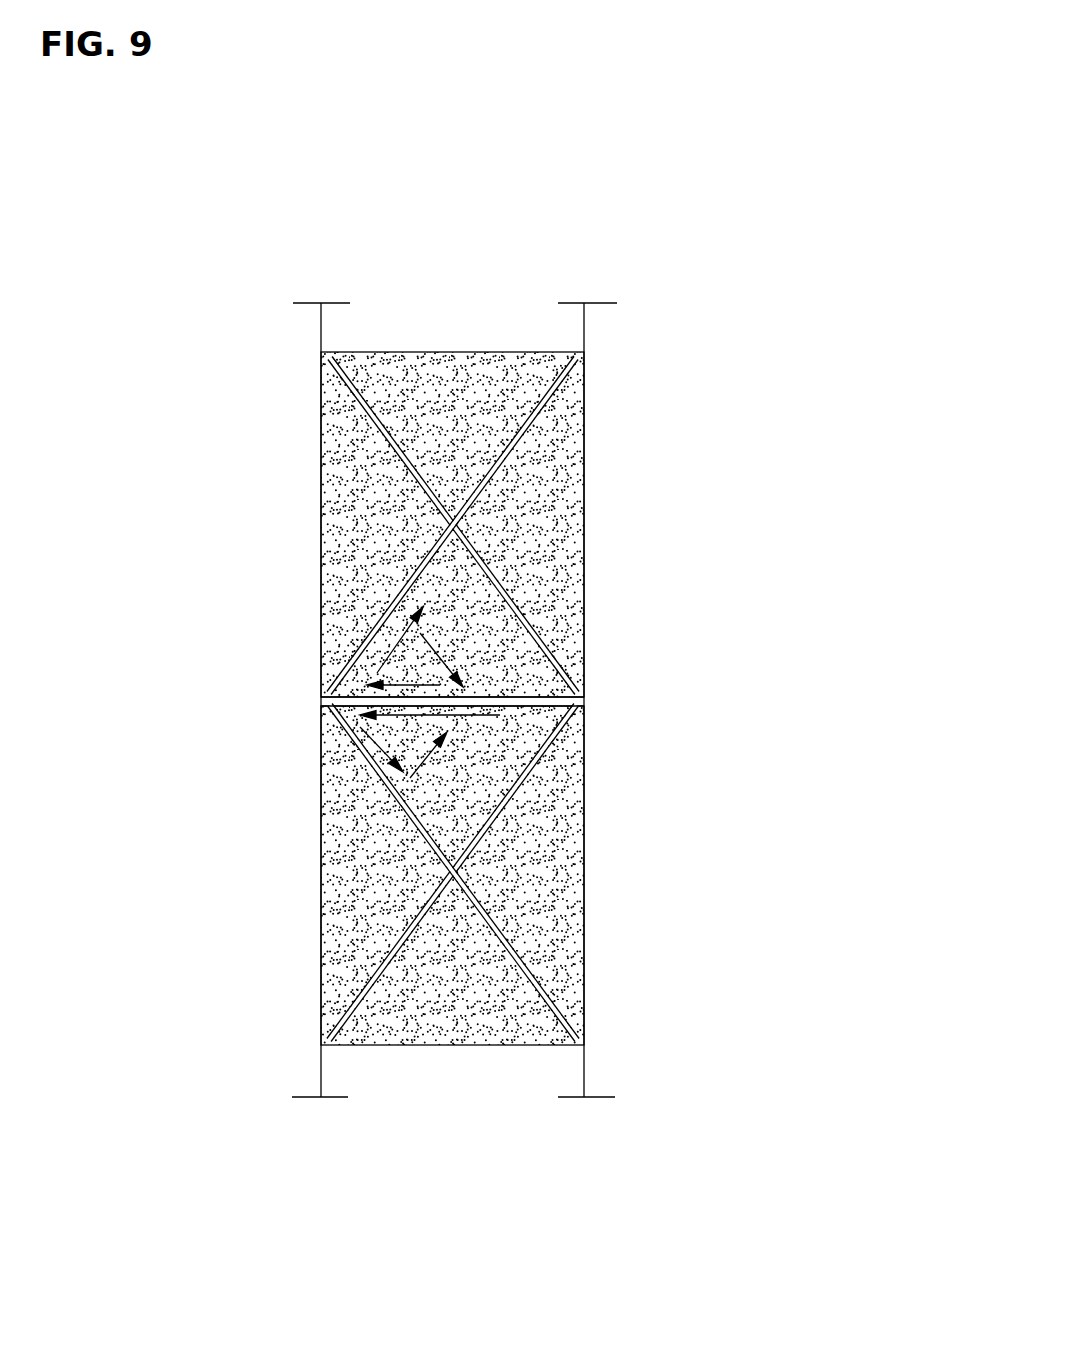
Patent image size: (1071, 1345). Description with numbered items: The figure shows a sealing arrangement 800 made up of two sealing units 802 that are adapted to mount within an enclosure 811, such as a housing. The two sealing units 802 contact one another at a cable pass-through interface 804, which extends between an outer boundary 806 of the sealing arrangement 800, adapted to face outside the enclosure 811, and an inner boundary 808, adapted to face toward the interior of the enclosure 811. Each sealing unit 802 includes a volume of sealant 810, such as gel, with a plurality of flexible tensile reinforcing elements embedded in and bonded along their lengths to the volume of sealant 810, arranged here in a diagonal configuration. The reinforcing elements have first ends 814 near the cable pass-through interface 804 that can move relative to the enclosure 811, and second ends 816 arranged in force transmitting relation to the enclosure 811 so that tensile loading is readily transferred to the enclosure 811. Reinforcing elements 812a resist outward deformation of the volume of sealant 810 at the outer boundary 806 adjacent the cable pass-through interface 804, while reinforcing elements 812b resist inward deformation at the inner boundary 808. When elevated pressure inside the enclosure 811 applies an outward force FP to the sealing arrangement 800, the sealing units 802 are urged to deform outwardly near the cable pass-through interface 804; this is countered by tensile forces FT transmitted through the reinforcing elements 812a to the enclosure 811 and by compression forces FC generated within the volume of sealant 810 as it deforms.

The sealing arrangement 800 is at (452, 635).
The sealing unit 802 is at (603, 436).
The cable pass-through interface 804 is at (553, 667).
The outer boundary 806 is at (302, 539).
The inner boundary 808 is at (603, 554).
The volume of sealant 810 is at (403, 378).
The enclosure 811 is at (320, 323).
The reinforcing elements 812a is at (523, 420).
The reinforcing elements 812b is at (400, 447).
The first ends 814 is at (585, 696).
The second ends 816 is at (333, 360).
The tensile forces FT is at (385, 648).
The compression forces FC is at (433, 647).
The outward force FP is at (427, 687).